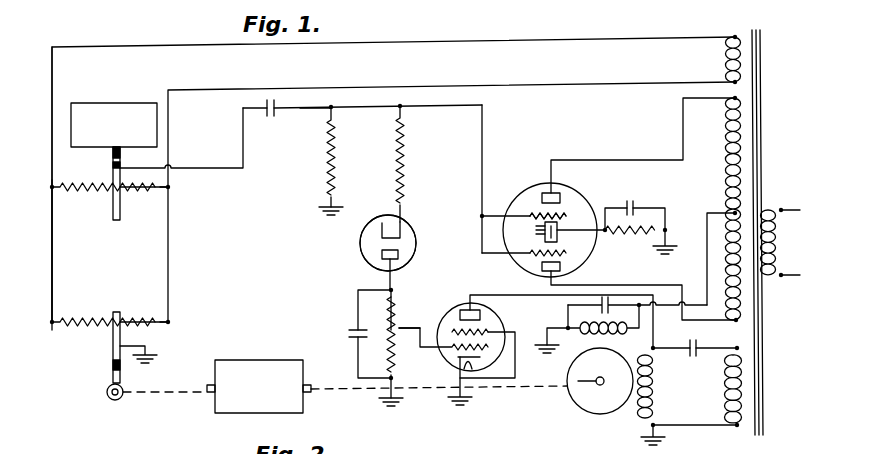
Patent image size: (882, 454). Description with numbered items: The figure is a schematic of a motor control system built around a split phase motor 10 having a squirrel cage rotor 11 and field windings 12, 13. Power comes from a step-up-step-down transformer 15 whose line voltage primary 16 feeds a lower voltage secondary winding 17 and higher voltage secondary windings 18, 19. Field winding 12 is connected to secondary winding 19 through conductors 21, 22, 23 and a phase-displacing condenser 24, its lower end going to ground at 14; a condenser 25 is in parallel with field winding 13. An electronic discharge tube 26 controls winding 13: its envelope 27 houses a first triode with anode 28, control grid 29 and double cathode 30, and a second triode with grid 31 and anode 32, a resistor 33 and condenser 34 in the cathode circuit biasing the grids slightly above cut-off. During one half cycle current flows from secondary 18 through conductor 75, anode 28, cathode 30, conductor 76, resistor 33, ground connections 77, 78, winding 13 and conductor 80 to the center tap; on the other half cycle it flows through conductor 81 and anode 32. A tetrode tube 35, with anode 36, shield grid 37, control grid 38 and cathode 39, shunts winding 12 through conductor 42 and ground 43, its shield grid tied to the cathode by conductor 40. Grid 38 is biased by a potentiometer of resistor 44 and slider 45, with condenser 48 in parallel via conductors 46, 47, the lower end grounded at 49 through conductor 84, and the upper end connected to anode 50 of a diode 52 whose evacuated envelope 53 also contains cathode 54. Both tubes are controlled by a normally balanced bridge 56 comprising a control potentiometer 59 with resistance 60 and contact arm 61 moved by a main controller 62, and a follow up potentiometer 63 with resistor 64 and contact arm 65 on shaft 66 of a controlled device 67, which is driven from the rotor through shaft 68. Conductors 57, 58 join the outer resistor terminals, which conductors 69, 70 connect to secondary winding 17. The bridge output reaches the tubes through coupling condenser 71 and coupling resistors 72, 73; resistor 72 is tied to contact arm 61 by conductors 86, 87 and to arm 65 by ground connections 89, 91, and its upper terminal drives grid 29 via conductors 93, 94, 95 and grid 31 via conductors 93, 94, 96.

The split phase motor 10 is at (563, 399).
The rotor 11 is at (590, 398).
The field winding 12 is at (660, 381).
The field winding 13 is at (568, 323).
The ground connection 14 is at (651, 427).
The step-up-step-down transformer 15 is at (769, 192).
The line voltage primary 16 is at (773, 281).
The secondary winding 17 is at (732, 61).
The secondary winding 18 is at (732, 146).
The secondary winding 19 is at (732, 392).
The conductor 21 is at (680, 428).
The conductor 22 is at (658, 347).
The conductor 23 is at (716, 349).
The condenser 24 is at (700, 347).
The condenser 25 is at (606, 300).
The electronic discharge tube 26 is at (523, 178).
The envelope 27 is at (571, 198).
The anode 28 is at (540, 198).
The control grid 29 is at (530, 214).
The cathode 30 is at (561, 229).
The grid 31 is at (580, 254).
The anode 32 is at (565, 269).
The resistor 33 is at (651, 229).
The condenser 34 is at (630, 206).
The tube 35 is at (458, 283).
The anode 36 is at (481, 314).
The shield grid 37 is at (452, 330).
The control grid 38 is at (489, 348).
The cathode 39 is at (458, 362).
The conductor 40 is at (516, 376).
The conductor 42 is at (498, 295).
The ground connection 43 is at (466, 397).
The resistor 44 is at (395, 301).
The slider 45 is at (398, 326).
The conductor 46 is at (358, 297).
The conductor 47 is at (356, 357).
The condenser 48 is at (352, 330).
The ground connection 49 is at (396, 400).
The anode 50 is at (399, 251).
The diode 52 is at (414, 217).
The evacuated envelope 53 is at (360, 243).
The cathode 54 is at (404, 229).
The bridge 56 is at (182, 252).
The conductor 57 is at (52, 260).
The conductor 58 is at (169, 263).
The control potentiometer 59 is at (106, 195).
The resistance 60 is at (135, 191).
The contact arm 61 is at (121, 213).
The main controller 62 is at (138, 103).
The follow up potentiometer 63 is at (108, 311).
The resistor 64 is at (136, 320).
The contact arm 65 is at (113, 340).
The shaft 66 is at (158, 392).
The controlled device 67 is at (246, 360).
The shaft 68 is at (333, 389).
The conductor 69 is at (52, 75).
The conductor 70 is at (169, 133).
The coupling condenser 71 is at (275, 115).
The coupling resistor 72 is at (338, 158).
The coupling resistor 73 is at (406, 148).
The conductor 75 is at (637, 160).
The conductor 76 is at (612, 232).
The ground connection 77 is at (668, 246).
The ground connection 78 is at (546, 343).
The conductor 80 is at (720, 253).
The conductor 81 is at (658, 285).
The conductor 84 is at (393, 346).
The conductor 86 is at (312, 108).
The conductor 87 is at (220, 168).
The ground connection 89 is at (325, 207).
The ground connection 91 is at (150, 356).
The conductor 93 is at (360, 107).
The conductor 94 is at (483, 123).
The conductor 95 is at (482, 215).
The conductor 96 is at (482, 235).